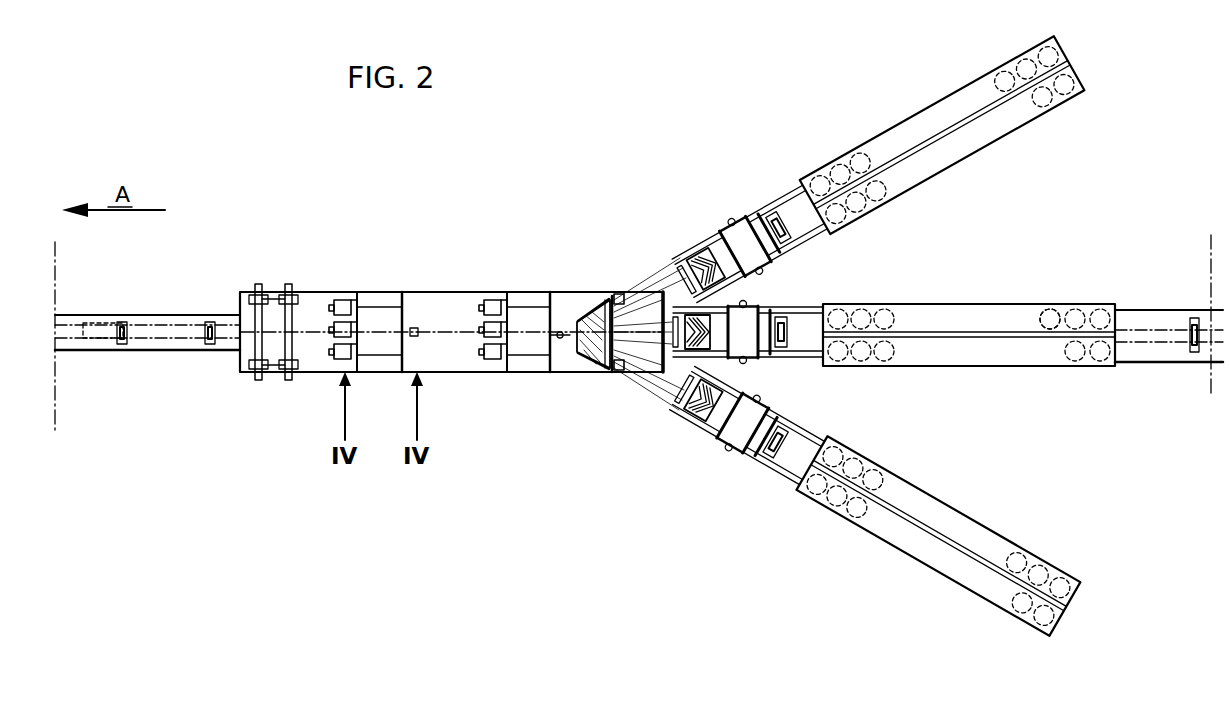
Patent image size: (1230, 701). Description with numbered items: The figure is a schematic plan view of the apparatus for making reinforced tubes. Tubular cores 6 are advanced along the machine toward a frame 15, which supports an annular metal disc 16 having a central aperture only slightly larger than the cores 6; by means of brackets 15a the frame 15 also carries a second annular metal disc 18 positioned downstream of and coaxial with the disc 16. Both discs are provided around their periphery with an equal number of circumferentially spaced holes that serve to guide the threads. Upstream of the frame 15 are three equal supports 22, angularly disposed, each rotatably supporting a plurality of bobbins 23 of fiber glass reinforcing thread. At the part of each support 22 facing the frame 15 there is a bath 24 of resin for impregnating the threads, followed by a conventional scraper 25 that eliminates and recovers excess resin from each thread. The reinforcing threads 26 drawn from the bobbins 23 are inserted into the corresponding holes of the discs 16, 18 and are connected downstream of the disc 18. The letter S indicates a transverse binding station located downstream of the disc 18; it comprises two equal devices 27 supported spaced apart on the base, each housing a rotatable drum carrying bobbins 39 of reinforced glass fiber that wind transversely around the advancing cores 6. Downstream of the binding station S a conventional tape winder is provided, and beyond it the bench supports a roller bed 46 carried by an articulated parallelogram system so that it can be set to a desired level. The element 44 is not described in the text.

The tubular cores 6 is at (177, 332).
The roller bed 46 is at (95, 320).
The flange coupling 44 is at (272, 300).
The bobbin 39 is at (338, 374).
The transverse binding device 27 is at (372, 365).
The second annular metal disc 18 is at (566, 330).
The frame 15 is at (614, 373).
The brackets 15a is at (588, 318).
The annular metal disc 16 is at (619, 298).
The reinforcing threads 26 is at (657, 286).
The scraper 25 is at (700, 356).
The bath of resin 24 is at (752, 320).
The support 22 is at (980, 302).
The bobbins of reinforcing thread 23 is at (1076, 312).
The transverse binding station S is at (450, 259).